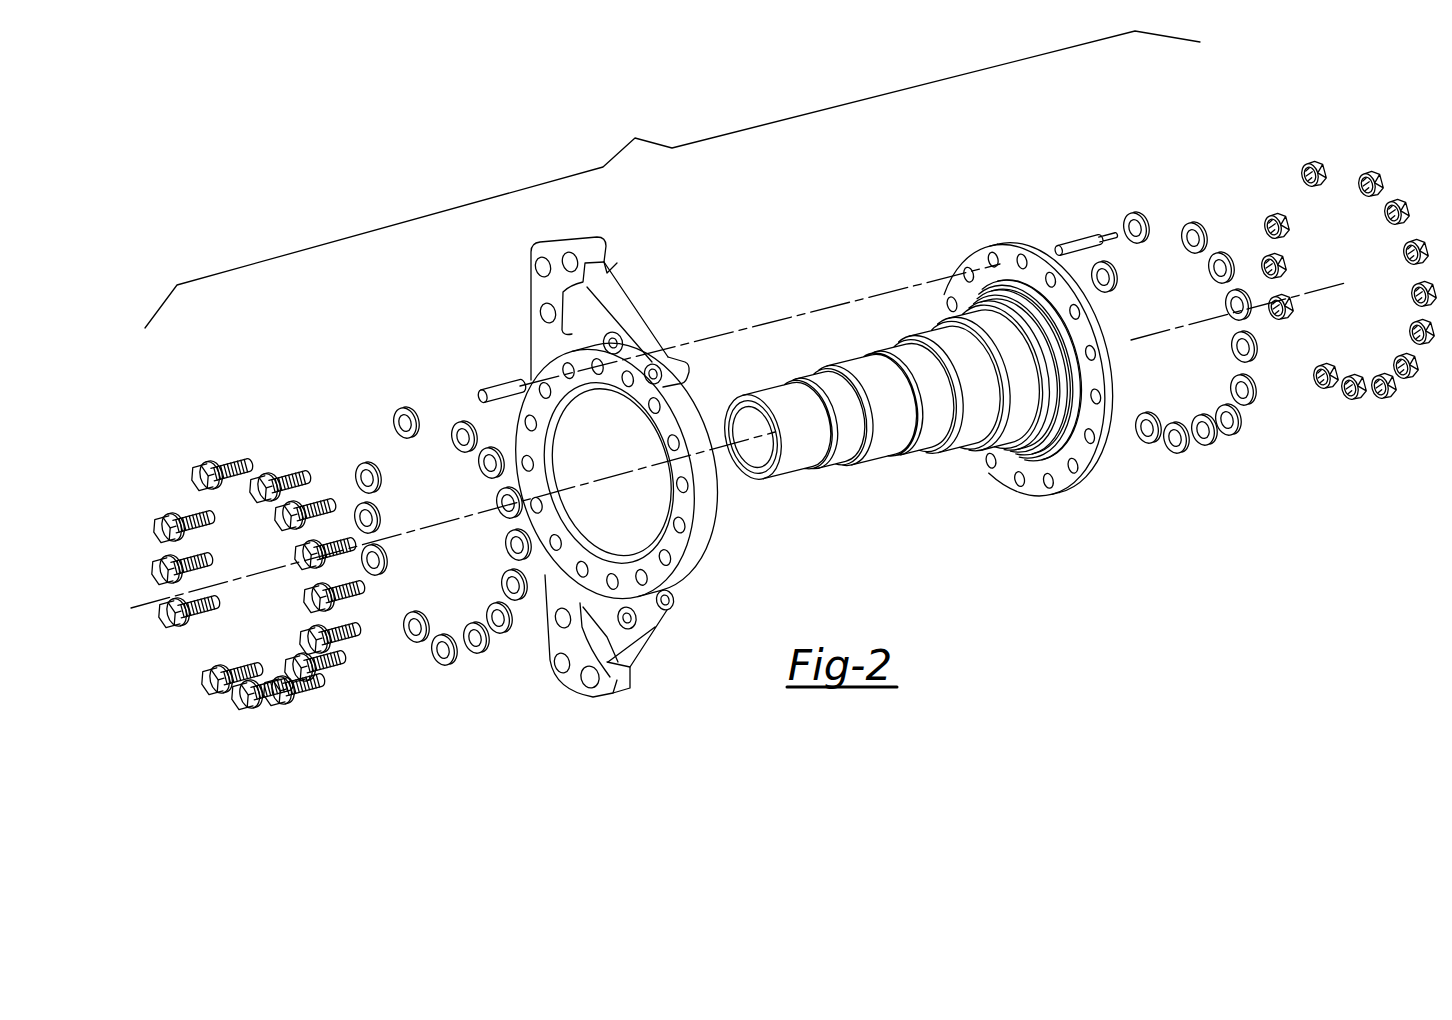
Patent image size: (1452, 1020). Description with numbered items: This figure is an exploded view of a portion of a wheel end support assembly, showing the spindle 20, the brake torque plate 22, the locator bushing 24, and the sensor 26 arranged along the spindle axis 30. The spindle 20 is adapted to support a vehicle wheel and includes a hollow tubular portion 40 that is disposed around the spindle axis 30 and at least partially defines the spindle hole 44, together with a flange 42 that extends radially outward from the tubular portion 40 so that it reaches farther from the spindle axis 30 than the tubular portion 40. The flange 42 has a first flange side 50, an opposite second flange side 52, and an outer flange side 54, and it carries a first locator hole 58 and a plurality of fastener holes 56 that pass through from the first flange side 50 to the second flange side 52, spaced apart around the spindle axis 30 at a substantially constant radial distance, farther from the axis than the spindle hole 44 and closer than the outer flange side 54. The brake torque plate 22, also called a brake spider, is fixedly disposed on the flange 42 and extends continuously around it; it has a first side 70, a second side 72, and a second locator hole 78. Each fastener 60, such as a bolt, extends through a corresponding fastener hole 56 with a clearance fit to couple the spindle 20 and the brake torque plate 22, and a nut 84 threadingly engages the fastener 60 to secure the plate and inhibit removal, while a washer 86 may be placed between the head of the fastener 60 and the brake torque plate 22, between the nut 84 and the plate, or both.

The spindle 20 is at (838, 465).
The brake torque plate 22 is at (553, 245).
The locator bushing 24 is at (492, 385).
The sensor 26 is at (1077, 240).
The spindle axis 30 is at (263, 572).
The tubular portion 40 is at (890, 448).
The flange 42 is at (1026, 244).
The spindle hole 44 is at (760, 452).
The first flange side 50 is at (1012, 472).
The second flange side 52 is at (1095, 468).
The outer flange side 54 is at (1099, 470).
The fastener holes 56 is at (960, 272).
The first locator hole 58 is at (994, 250).
The fastener 60 is at (205, 608).
The first side 70 is at (665, 552).
The second side 72 is at (724, 528).
The second locator hole 78 is at (588, 378).
The nut 84 is at (1400, 255).
The washer 86 is at (496, 607).